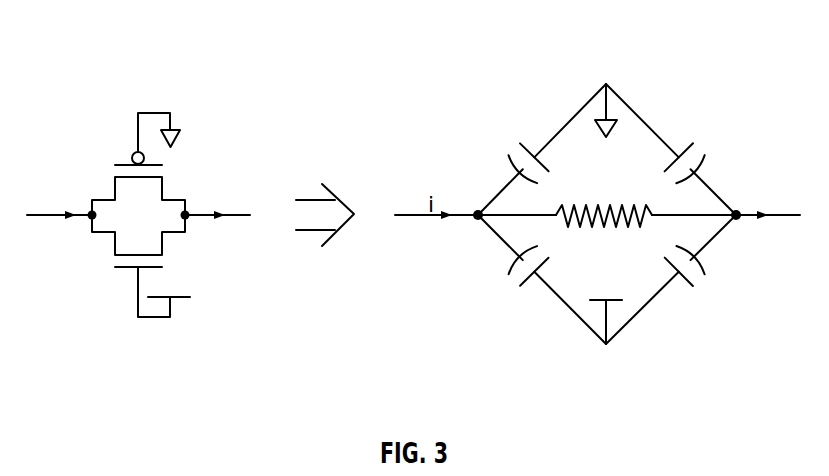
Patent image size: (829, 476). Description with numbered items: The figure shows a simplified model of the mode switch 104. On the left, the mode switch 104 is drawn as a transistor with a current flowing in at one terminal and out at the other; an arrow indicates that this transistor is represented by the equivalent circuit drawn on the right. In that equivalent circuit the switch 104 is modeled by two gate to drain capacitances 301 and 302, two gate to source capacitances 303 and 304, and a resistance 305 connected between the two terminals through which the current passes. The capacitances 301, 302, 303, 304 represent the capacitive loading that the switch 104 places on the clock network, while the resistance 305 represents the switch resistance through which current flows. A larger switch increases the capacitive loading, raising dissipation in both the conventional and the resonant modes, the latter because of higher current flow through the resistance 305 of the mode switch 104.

The mode switch 104 is at (216, 105).
The gate to drain capacitance (Cgd) 301 is at (523, 140).
The gate to drain capacitance (Cgd) 302 is at (528, 293).
The gate to source capacitance (Cgs) 303 is at (683, 140).
The gate to source capacitance (Cgs) 304 is at (684, 293).
The resistance 305 is at (598, 238).